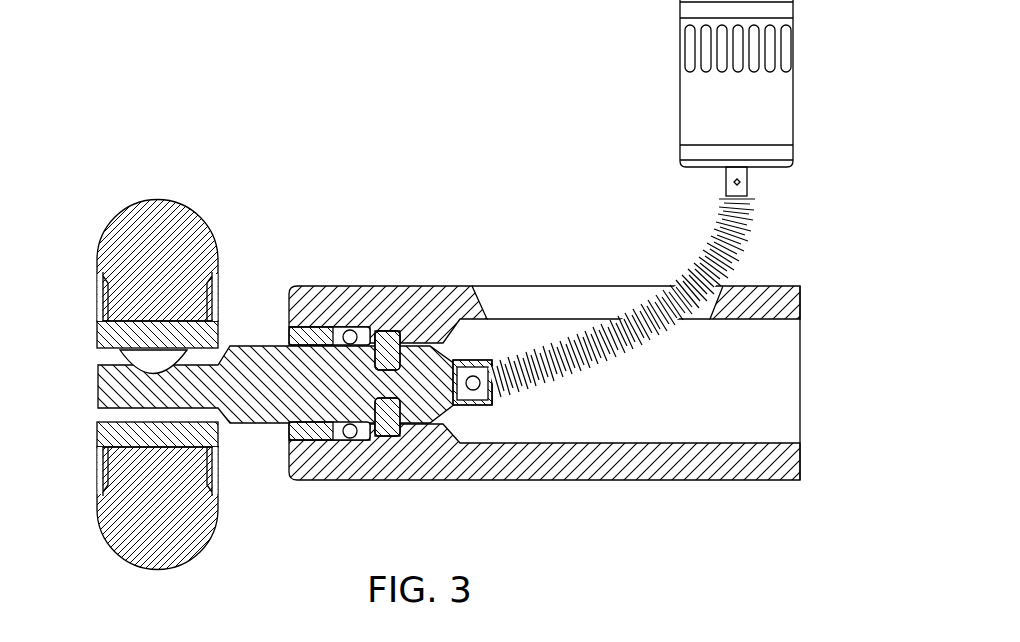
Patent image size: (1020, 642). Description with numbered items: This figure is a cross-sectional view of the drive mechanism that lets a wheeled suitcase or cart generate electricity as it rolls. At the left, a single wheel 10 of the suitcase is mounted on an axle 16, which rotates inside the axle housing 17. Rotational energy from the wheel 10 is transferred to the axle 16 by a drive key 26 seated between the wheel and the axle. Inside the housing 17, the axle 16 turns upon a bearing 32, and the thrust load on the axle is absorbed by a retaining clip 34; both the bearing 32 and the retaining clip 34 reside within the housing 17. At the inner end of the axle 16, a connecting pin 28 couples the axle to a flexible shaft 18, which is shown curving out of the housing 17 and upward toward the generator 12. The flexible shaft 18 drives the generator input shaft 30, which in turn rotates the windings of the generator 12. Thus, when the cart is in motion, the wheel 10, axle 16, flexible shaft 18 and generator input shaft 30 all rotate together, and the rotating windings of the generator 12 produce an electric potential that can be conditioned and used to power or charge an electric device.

The wheel 10 is at (160, 198).
The generator 12 is at (688, 100).
The axle 16 is at (128, 397).
The axle housing 17 is at (698, 482).
The flexible shaft 18 is at (703, 237).
The drive key 26 is at (140, 358).
The connecting pin 28 is at (492, 397).
The generator input shaft 30 is at (722, 182).
The bearing 32 is at (350, 328).
The retaining clip 34 is at (390, 330).